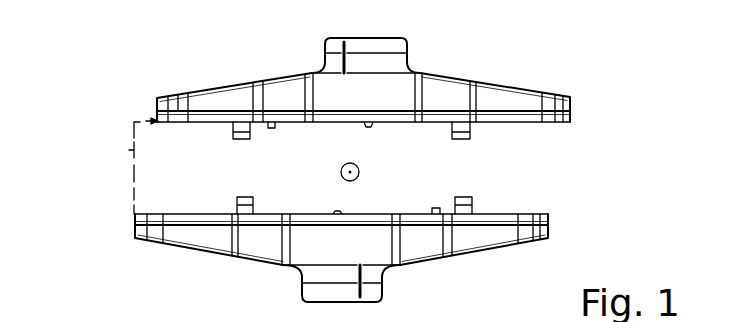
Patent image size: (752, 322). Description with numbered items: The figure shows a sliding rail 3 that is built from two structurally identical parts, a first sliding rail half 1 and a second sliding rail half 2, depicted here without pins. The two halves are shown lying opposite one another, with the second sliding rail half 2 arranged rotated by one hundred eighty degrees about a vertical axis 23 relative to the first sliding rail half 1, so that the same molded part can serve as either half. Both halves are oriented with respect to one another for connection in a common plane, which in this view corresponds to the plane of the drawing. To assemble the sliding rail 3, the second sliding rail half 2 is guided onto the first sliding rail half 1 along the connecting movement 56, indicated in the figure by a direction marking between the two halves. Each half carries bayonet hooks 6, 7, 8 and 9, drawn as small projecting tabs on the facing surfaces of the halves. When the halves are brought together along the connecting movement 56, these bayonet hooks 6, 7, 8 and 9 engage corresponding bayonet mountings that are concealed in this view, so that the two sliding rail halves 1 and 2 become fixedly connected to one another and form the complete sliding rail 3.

The first sliding rail half 1 is at (557, 105).
The second sliding rail half 2 is at (533, 230).
The sliding rail 3 is at (512, 74).
The bayonet hook 6 is at (237, 127).
The bayonet hook 7 is at (463, 130).
The bayonet hook 8 is at (465, 210).
The bayonet hook 9 is at (250, 206).
The vertical axis 23 is at (341, 170).
The connecting movement 56 is at (129, 150).